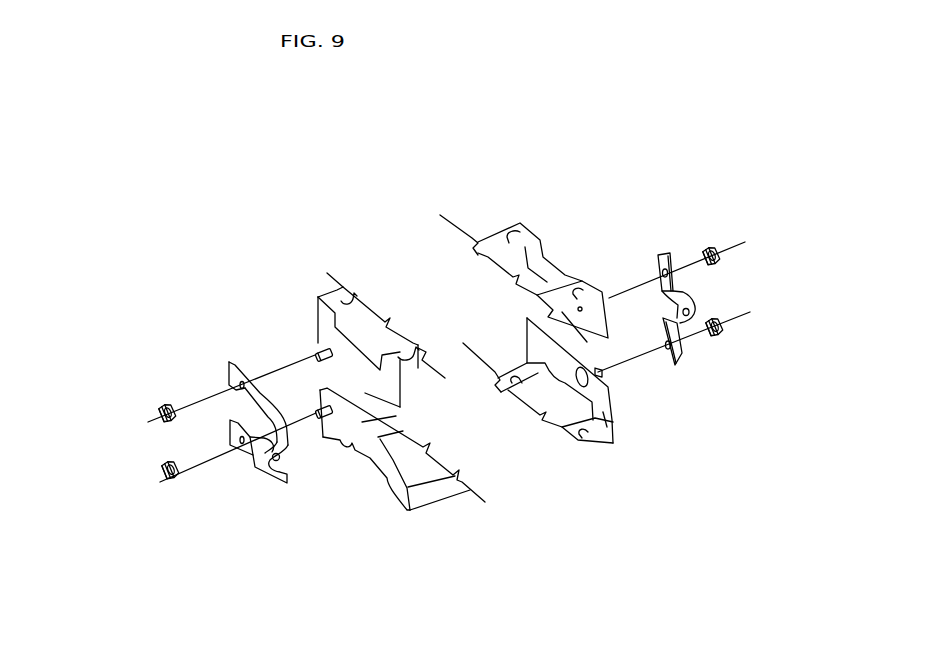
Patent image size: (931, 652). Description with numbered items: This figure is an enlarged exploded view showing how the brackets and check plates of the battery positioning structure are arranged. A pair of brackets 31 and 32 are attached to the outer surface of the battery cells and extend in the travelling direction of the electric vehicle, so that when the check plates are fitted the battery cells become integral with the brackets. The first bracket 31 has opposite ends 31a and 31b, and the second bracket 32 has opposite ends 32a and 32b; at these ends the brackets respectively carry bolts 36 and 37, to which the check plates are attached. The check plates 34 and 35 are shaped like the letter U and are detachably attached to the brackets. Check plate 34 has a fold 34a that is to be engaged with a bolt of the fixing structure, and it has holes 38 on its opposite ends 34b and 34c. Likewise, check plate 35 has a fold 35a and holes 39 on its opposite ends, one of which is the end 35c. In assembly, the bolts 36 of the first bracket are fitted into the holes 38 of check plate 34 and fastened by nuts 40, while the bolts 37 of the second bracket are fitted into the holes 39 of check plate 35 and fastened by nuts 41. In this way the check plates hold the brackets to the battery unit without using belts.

The bracket 31 is at (484, 229).
The end of bracket 31a is at (328, 318).
The end of bracket 31b is at (545, 268).
The bracket 32 is at (466, 503).
The end of bracket 32a is at (370, 452).
The end of bracket 32b is at (610, 433).
The check plate 34 is at (216, 372).
The fold 34a is at (265, 461).
The end of check plate 34b is at (230, 382).
The end of check plate 34c is at (235, 452).
The check plate 35 is at (676, 255).
The fold 35a is at (671, 256).
The end of check plate 35c is at (675, 353).
The bolt 36 is at (318, 407).
The bolt 37 is at (605, 372).
The hole 38 is at (243, 383).
The hole 39 is at (657, 270).
The nut 40 is at (160, 478).
The nut 41 is at (723, 323).